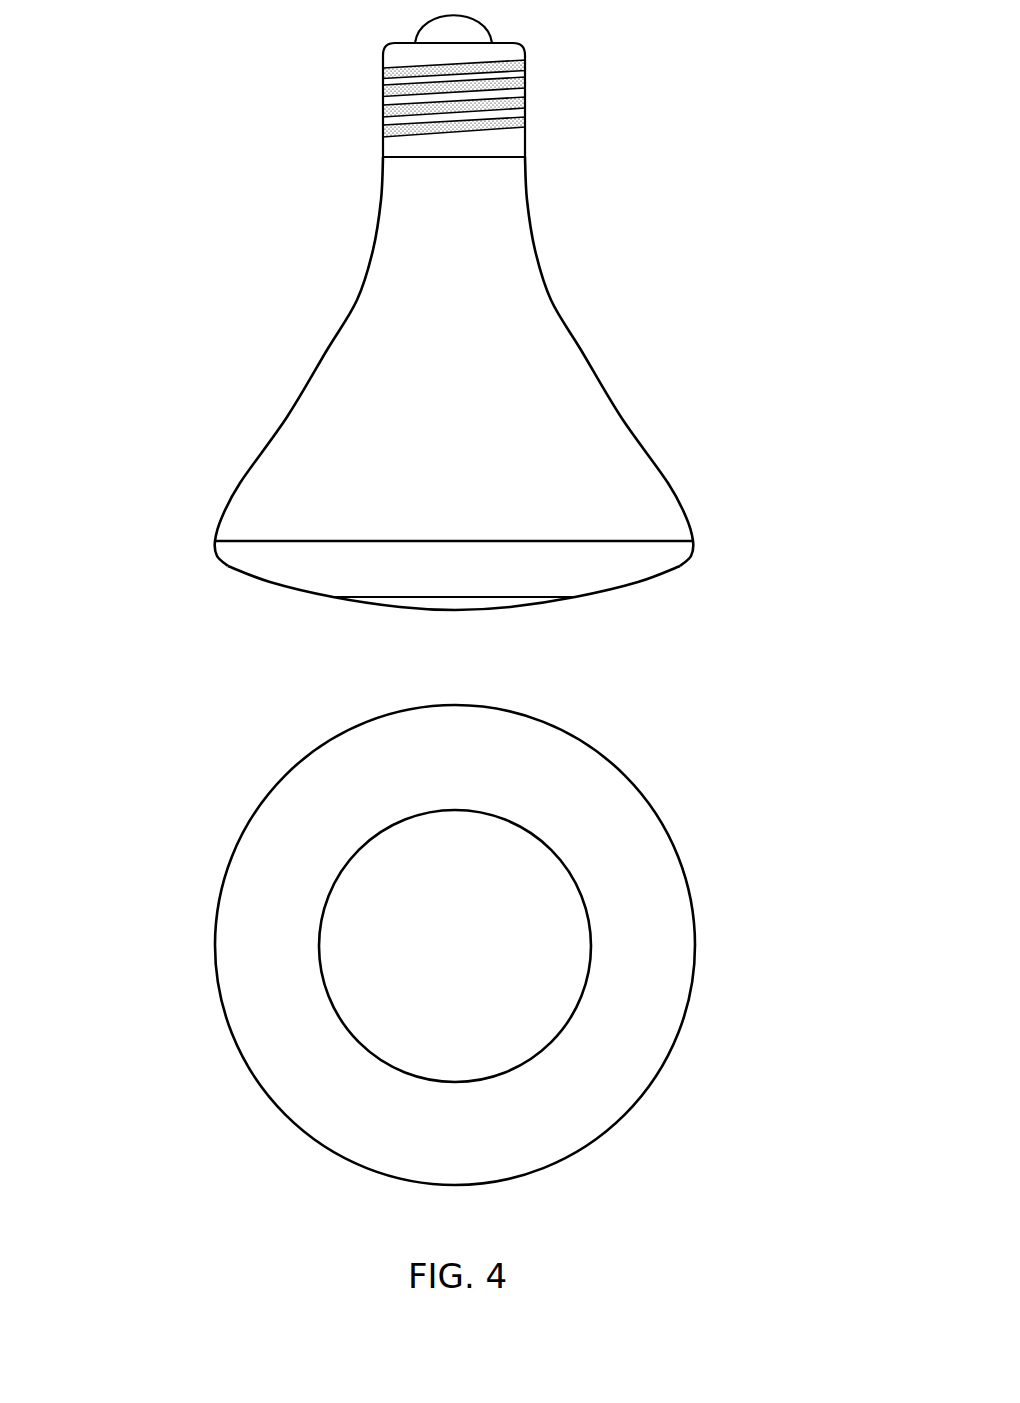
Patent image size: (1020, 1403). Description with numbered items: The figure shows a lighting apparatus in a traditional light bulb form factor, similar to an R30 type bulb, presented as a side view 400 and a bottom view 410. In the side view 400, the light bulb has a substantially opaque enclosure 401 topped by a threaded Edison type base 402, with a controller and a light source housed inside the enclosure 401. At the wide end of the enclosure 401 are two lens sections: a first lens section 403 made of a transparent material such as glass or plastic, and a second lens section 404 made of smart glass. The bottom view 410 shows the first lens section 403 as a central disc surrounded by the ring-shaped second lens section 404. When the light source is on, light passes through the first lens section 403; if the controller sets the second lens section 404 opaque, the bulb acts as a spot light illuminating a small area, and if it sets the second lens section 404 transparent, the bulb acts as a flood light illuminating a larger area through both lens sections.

The light bulb (side view) 400 is at (487, 456).
The enclosure 401 is at (560, 320).
The Edison type base 402 is at (460, 88).
The first lens section 403 is at (445, 602).
The second lens section 404 is at (605, 570).
The light bulb (bottom view) 410 is at (198, 928).